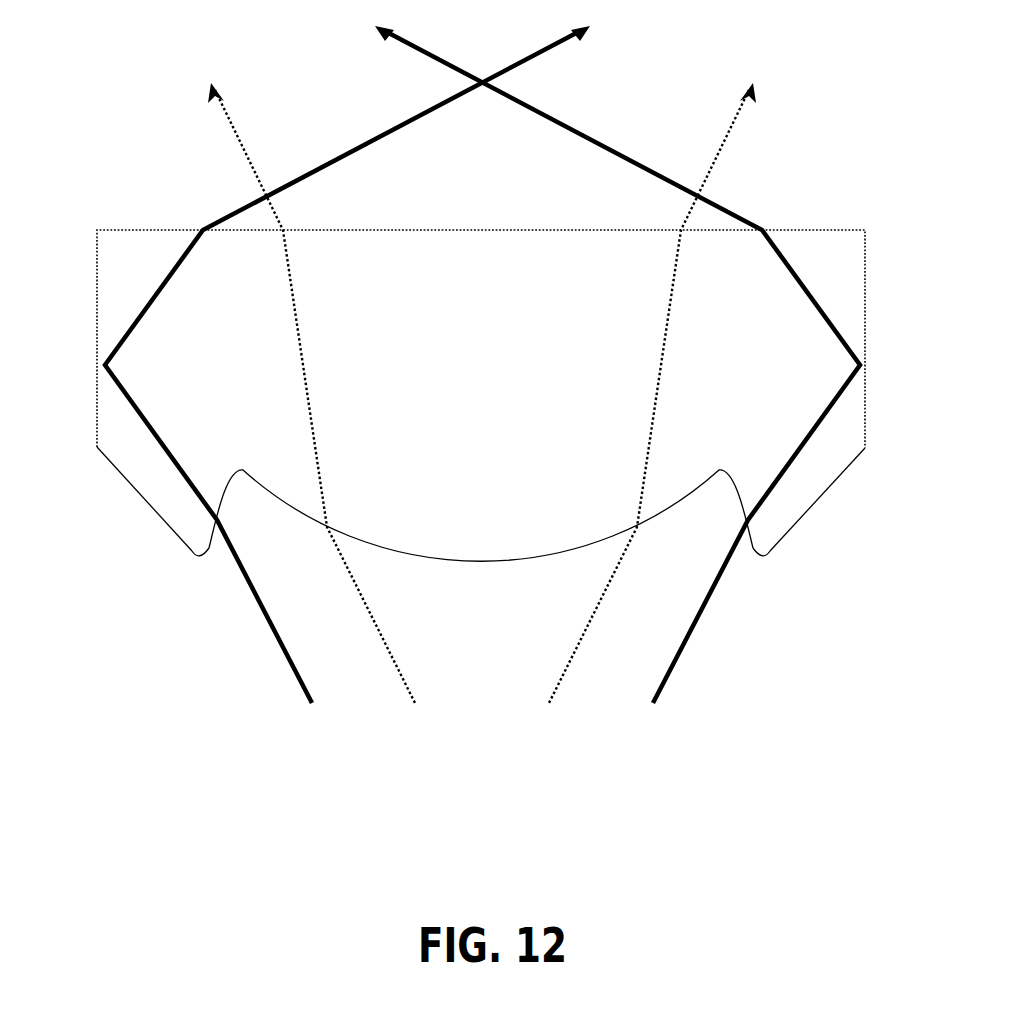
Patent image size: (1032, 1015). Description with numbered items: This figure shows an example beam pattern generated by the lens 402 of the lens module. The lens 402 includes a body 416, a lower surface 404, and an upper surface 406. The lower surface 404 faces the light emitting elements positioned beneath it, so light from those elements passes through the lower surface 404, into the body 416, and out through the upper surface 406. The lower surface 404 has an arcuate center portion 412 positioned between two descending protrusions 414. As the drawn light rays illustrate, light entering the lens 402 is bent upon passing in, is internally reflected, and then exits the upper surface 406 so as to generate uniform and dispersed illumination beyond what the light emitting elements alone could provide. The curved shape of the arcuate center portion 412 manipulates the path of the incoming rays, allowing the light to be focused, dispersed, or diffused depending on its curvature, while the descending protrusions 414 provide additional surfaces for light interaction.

The lens 402 is at (147, 171).
The lower surface 404 is at (478, 565).
The upper surface 406 is at (460, 237).
The arcuate center portion 412 is at (398, 553).
The descending protrusions 414 is at (205, 558).
The body 416 is at (830, 290).